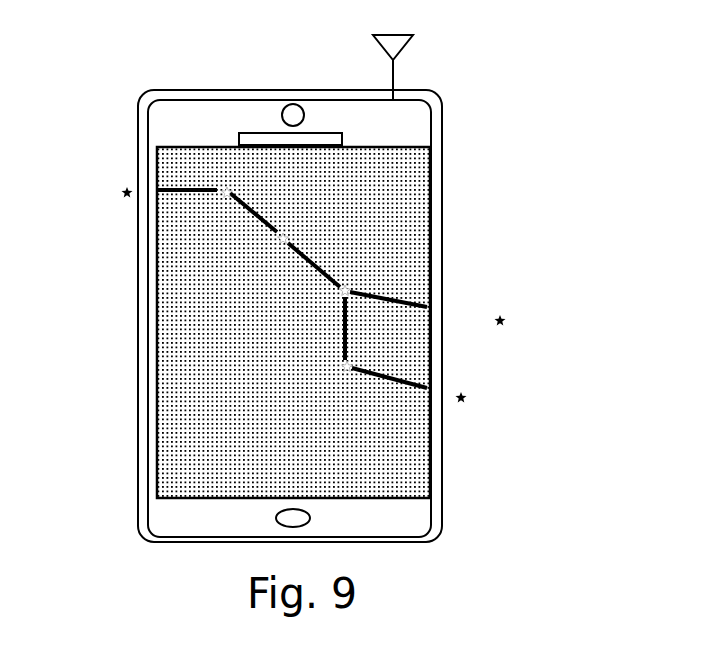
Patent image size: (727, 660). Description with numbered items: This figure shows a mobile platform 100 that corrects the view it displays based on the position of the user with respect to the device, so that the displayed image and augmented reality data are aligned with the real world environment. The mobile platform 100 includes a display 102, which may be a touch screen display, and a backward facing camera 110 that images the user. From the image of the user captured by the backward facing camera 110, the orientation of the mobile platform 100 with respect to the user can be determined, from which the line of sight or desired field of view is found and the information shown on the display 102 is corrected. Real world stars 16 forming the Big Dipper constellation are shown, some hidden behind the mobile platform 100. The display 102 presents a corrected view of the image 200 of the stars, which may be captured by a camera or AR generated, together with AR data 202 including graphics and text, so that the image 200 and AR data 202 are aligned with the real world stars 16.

The mobile platform 100 is at (120, 117).
The backward facing camera 110 is at (283, 117).
The display 102 is at (157, 310).
The real world stars 16 is at (122, 190).
The image of the stars 200 is at (343, 290).
The AR data 202 is at (282, 388).